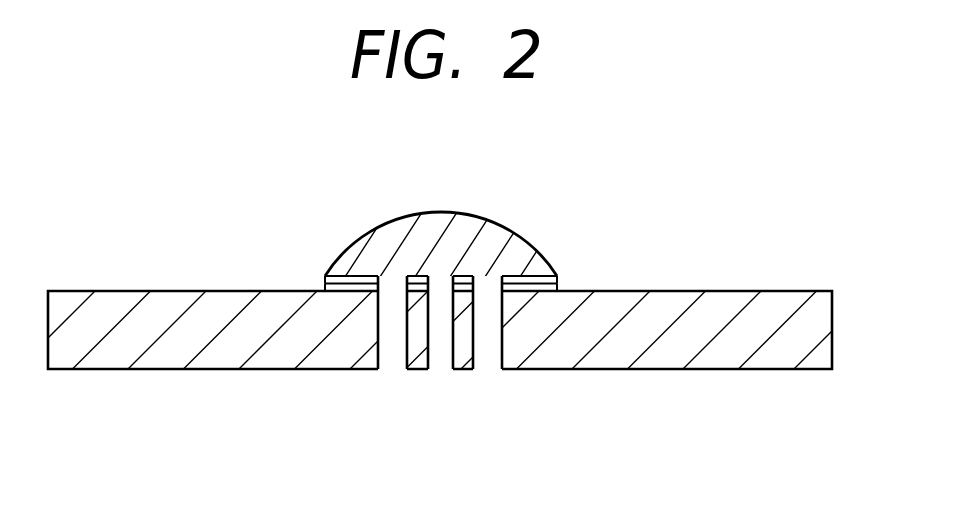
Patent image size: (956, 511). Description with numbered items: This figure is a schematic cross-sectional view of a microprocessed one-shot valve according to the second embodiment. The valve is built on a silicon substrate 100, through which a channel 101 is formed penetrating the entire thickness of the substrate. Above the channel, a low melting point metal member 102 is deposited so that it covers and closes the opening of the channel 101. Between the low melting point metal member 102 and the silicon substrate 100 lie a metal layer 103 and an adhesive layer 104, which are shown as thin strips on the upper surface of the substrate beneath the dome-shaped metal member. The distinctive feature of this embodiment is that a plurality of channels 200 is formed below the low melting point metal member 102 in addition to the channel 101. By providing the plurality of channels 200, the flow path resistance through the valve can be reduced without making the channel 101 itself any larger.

The silicon substrate 100 is at (740, 302).
The channel 101 is at (395, 360).
The low melting point metal member 102 is at (518, 248).
The metal layer 103 is at (324, 278).
The adhesive layer 104 is at (324, 284).
The plurality of channels 200 is at (490, 360).